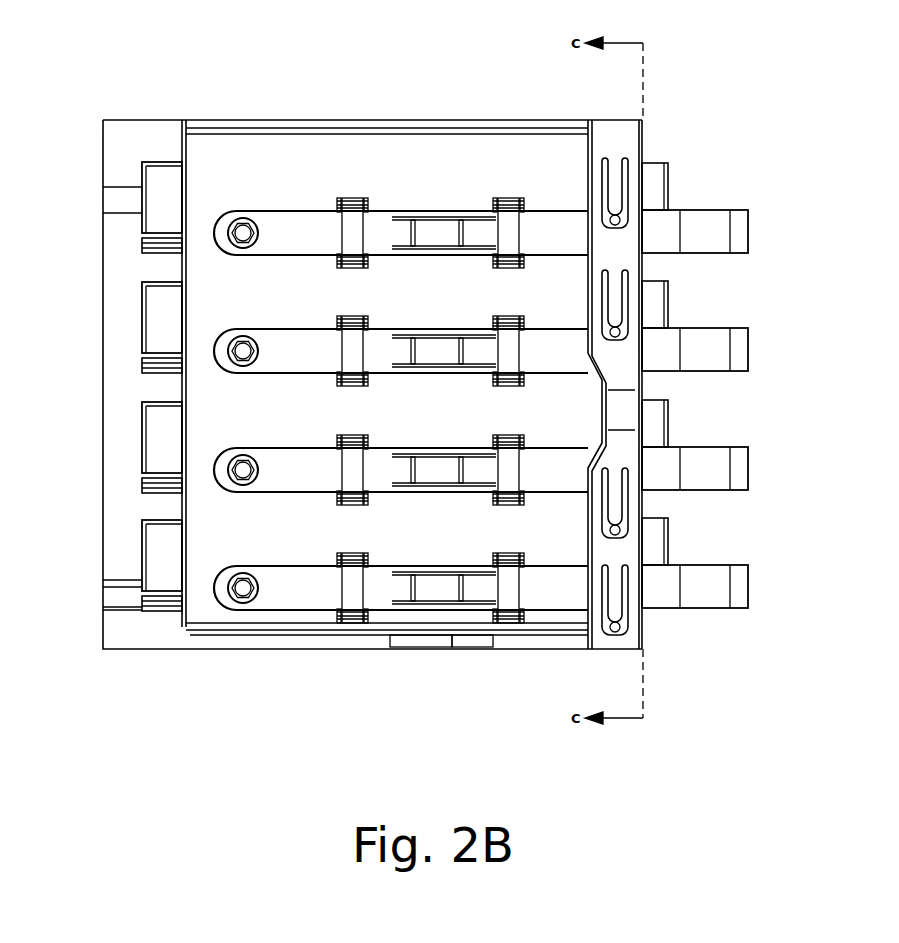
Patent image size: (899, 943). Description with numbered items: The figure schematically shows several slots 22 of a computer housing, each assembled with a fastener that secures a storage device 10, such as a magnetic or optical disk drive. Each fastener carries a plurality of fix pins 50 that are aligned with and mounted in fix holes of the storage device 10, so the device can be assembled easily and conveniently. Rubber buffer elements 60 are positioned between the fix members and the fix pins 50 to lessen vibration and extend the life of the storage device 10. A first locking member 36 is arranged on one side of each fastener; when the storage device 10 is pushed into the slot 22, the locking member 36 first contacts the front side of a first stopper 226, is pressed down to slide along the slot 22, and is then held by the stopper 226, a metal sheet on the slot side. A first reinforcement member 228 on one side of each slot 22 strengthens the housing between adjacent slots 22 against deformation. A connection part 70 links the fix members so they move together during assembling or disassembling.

The storage device 10 is at (657, 188).
The slot 22 is at (253, 613).
The first locking member 36 is at (446, 235).
The fix pin 50 is at (208, 665).
The buffer element 60 is at (160, 600).
The connection part 70 is at (727, 232).
The first stopper 226 is at (508, 215).
The first reinforcement member 228 is at (352, 215).